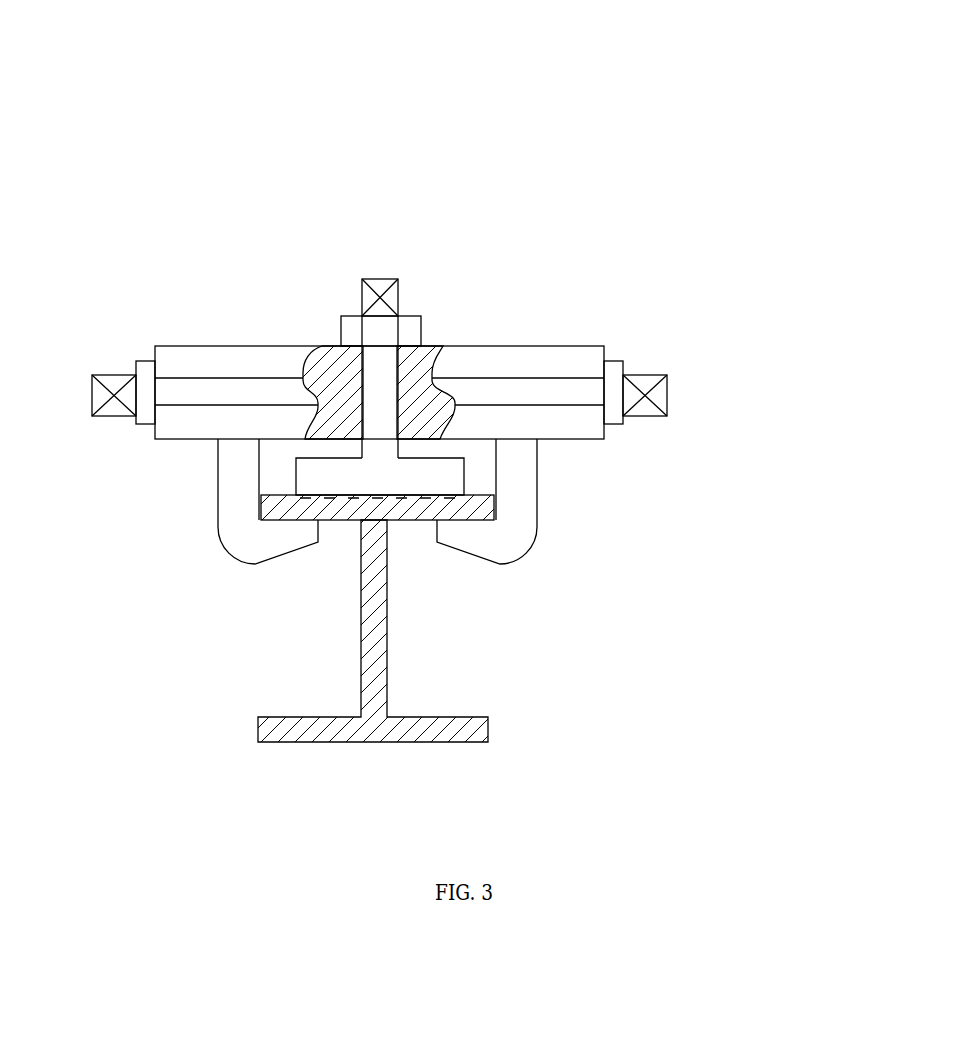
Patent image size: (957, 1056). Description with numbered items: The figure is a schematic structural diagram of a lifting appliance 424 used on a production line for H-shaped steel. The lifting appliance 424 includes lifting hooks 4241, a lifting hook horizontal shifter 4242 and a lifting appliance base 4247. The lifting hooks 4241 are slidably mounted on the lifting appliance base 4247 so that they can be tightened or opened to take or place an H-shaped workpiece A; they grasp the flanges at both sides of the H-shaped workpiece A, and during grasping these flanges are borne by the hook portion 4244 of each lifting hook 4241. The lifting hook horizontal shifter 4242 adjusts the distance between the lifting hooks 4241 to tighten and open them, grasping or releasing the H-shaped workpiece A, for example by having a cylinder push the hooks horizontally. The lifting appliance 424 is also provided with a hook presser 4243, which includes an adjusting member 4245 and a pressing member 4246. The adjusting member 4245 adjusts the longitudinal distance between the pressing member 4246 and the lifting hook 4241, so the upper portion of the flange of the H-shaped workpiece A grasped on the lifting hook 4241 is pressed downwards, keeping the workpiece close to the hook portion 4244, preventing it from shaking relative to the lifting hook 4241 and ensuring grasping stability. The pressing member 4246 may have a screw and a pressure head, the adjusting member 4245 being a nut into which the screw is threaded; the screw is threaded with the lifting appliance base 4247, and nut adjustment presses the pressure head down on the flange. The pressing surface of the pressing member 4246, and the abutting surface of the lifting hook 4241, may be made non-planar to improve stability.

The lifting appliance 424 is at (474, 67).
The lifting hooks 4241 is at (538, 480).
The lifting hook horizontal shifter 4242 is at (530, 392).
The hook presser 4243 is at (383, 278).
The hook portion 4244 is at (468, 536).
The adjusting member 4245 is at (346, 333).
The pressing member 4246 is at (325, 475).
The lifting appliance base 4247 is at (187, 440).
The H-shaped workpiece A is at (373, 618).